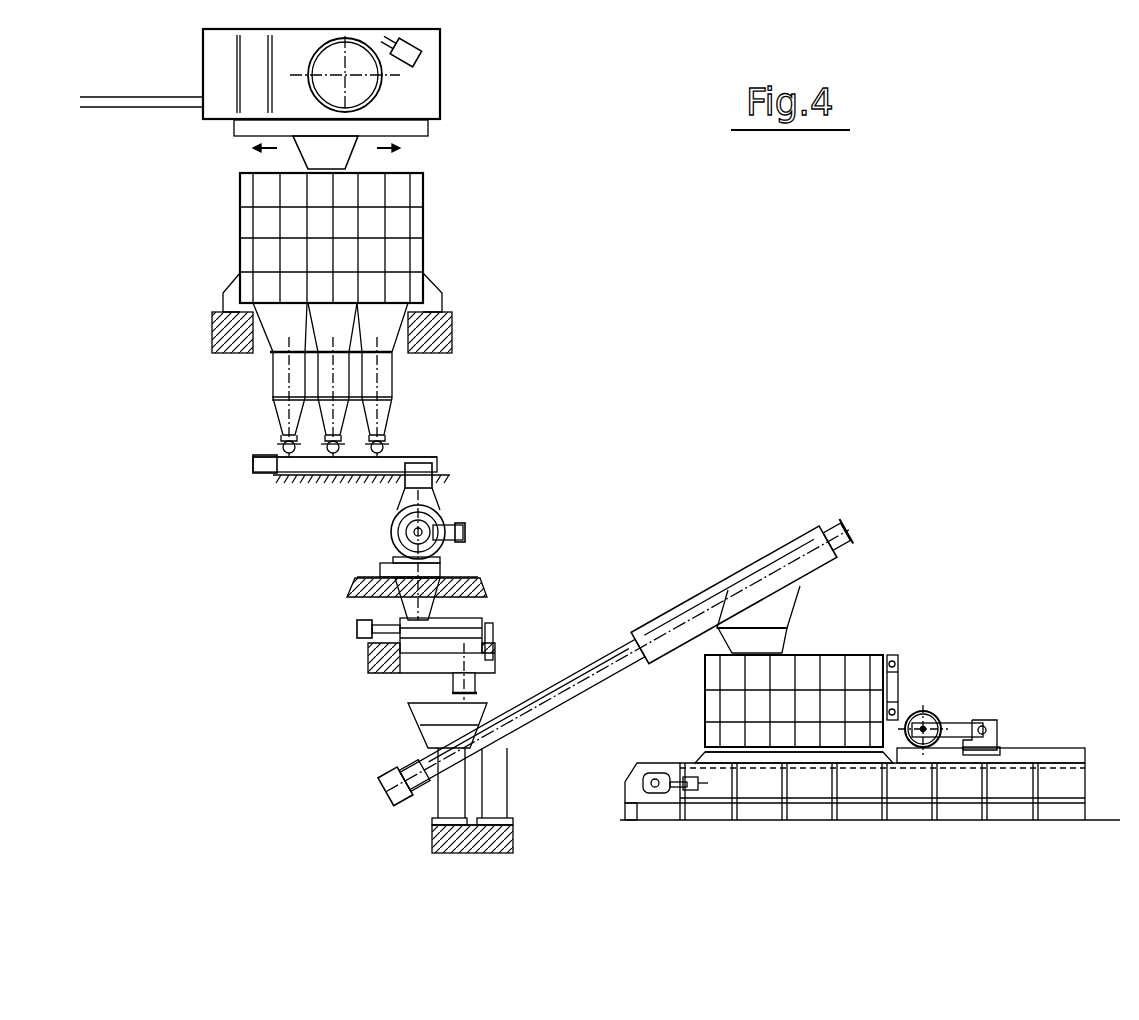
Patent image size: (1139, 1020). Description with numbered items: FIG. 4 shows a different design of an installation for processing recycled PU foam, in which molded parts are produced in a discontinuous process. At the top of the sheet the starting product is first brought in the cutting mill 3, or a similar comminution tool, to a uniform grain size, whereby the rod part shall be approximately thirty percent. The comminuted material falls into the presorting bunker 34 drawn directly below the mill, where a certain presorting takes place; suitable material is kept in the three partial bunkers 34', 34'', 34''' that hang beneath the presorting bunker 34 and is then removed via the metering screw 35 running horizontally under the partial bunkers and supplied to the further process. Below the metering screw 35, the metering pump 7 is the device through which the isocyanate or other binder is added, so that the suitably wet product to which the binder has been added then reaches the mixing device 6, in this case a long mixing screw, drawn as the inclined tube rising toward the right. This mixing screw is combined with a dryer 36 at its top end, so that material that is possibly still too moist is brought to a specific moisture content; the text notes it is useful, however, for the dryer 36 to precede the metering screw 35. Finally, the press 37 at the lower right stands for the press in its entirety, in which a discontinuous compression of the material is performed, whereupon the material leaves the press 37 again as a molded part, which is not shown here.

The cutting mill 3 is at (357, 83).
The presorting bunker 34 is at (373, 261).
The partial bunker 34' is at (453, 380).
The partial bunker 34'' is at (433, 380).
The partial bunker 34''' is at (233, 380).
The metering screw 35 is at (333, 462).
The metering pump 7 is at (393, 658).
The mixing device 6 is at (393, 808).
The dryer 36 is at (707, 597).
The press 37 is at (827, 702).